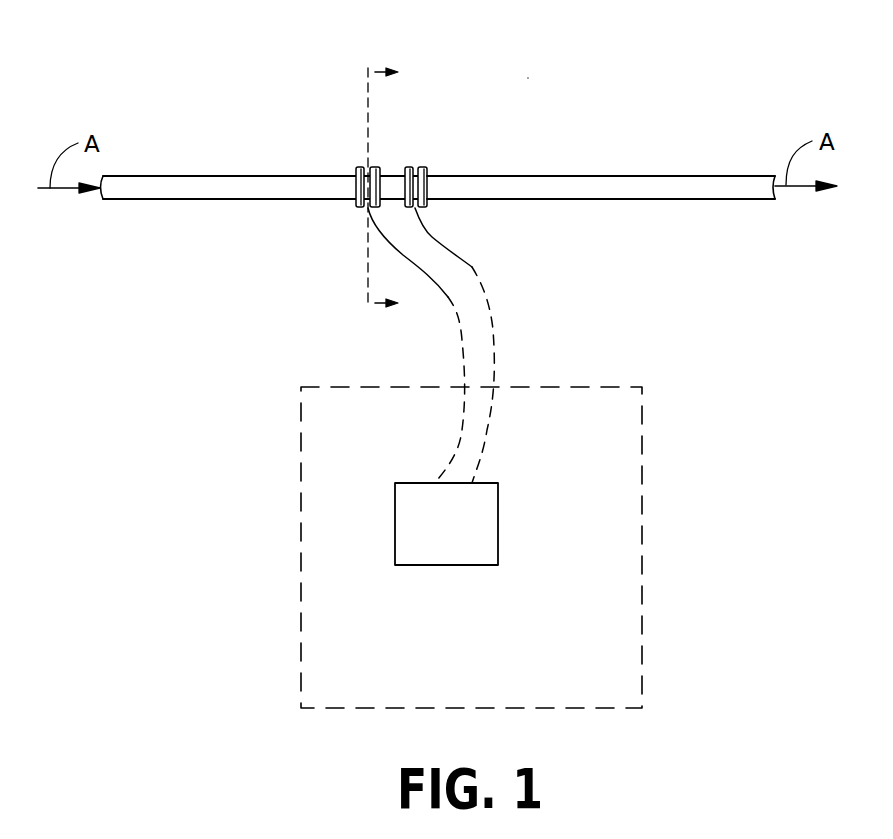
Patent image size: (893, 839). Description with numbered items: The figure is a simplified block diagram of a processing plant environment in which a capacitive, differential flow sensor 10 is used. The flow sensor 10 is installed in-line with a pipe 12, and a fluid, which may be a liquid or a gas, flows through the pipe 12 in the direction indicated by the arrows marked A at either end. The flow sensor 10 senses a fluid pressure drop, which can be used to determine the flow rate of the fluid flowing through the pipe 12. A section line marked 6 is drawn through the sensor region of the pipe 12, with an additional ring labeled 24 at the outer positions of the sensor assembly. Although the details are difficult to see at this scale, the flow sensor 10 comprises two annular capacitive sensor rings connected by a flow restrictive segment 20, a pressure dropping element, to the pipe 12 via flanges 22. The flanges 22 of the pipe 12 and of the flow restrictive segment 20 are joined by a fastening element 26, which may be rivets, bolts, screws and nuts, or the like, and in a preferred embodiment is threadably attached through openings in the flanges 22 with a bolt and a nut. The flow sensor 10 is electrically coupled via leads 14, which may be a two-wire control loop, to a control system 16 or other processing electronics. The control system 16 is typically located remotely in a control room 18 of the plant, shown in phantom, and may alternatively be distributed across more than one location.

The section line 6- 6 is at (391, 188).
The flow sensor 10 is at (539, 71).
The pipe 12 is at (600, 176).
The leads 14 is at (430, 275).
The control system 16 is at (499, 537).
The control room 18 is at (645, 585).
The flow restrictive segment 20 is at (389, 158).
The flanges 22 is at (375, 167).
The outer rings 24 is at (360, 167).
The fastening element 26 is at (430, 175).